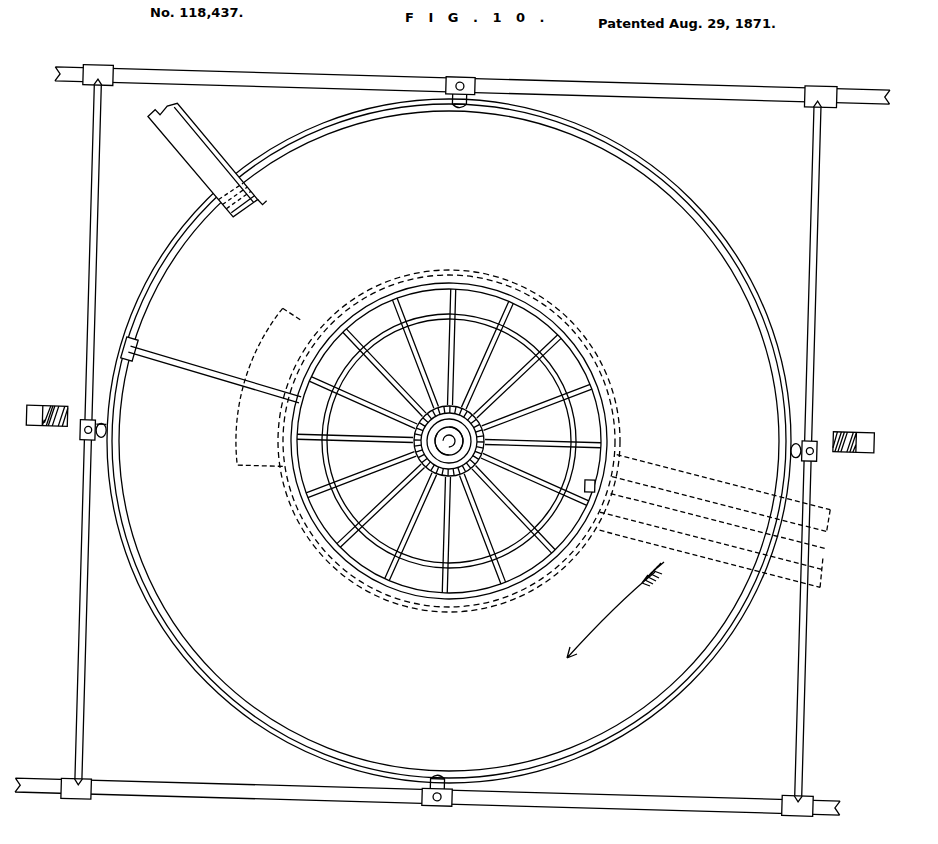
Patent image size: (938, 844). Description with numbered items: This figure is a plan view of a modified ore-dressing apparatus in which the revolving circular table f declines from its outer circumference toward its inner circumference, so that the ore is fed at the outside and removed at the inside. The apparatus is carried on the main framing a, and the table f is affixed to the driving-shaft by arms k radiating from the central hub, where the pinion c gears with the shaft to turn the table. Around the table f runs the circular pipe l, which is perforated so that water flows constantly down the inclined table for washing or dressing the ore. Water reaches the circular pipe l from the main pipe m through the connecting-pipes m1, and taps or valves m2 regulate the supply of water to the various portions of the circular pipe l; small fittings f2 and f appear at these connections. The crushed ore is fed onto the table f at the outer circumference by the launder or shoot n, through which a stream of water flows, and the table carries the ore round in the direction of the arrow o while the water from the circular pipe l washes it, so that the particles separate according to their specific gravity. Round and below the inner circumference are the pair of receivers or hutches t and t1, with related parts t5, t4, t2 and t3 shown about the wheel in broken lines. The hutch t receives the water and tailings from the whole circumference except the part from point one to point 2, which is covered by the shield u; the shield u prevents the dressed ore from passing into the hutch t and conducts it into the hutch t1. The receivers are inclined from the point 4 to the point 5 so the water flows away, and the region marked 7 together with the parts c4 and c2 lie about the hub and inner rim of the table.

The main pipe m is at (452, 442).
The connecting-pipes m1 is at (447, 442).
The taps or valves m2 is at (448, 443).
The main framing a is at (450, 429).
The circular pipe l is at (449, 441).
The launder or shoot n is at (202, 159).
The fastening brackets f2 is at (516, 444).
The circular table f is at (101, 445).
The arms k is at (449, 441).
The pinion c is at (387, 504).
The dashed circle t5 is at (449, 441).
The receiver or hutch t is at (510, 439).
The receiver or hutch t1 is at (425, 439).
The bar t4 is at (211, 370).
The dashed bar t2 is at (720, 502).
The dashed bar t3 is at (711, 549).
The dashed arc 7 is at (262, 390).
The point 2 is at (294, 321).
The point 4 is at (317, 403).
The point 5 is at (584, 483).
The shield u is at (304, 452).
The part c4 is at (616, 403).
The part c2 is at (587, 415).
The arrow o is at (615, 610).